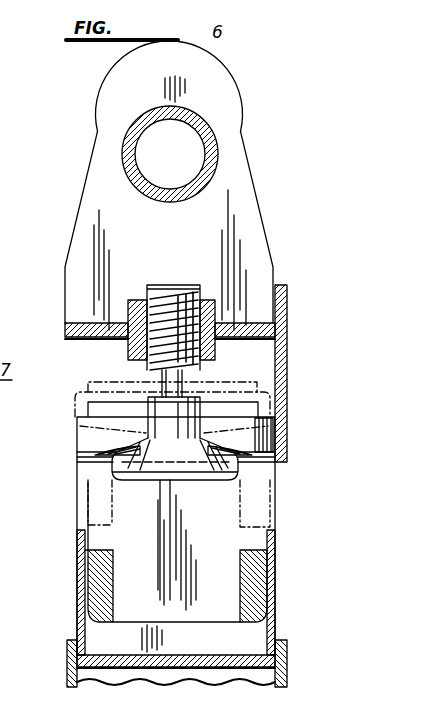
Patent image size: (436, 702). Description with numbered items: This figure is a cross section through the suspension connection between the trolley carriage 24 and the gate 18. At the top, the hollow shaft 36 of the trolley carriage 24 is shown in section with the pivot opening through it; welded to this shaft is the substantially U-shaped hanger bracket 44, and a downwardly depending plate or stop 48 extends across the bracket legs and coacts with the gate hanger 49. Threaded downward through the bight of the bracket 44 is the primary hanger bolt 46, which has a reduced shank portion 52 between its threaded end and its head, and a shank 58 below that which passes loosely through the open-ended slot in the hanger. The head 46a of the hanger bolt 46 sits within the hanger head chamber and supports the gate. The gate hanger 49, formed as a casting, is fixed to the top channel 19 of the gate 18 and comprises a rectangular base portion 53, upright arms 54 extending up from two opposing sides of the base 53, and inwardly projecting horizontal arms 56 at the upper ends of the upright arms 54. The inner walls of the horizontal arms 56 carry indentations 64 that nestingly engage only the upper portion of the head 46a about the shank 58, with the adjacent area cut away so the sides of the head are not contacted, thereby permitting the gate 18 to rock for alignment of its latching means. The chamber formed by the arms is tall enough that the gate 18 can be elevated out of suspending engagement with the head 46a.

The trolley carriage 24 is at (98, 114).
The hollow shaft 36 is at (131, 167).
The U-shaped hanger bracket 44 is at (80, 228).
The hanger bolt 46 is at (184, 290).
The head of hanger bolt 46a is at (226, 480).
The reduced shank portion 52 is at (166, 383).
The shank 58 is at (195, 398).
The indentations 64 is at (110, 452).
The gate hanger 49 is at (77, 480).
The upright arms 54 is at (100, 490).
The horizontal arms 56 is at (272, 456).
The rectangular base portion 53 is at (251, 574).
The top channel 19 is at (79, 576).
The gate 18 is at (67, 661).
The stop plate 48 is at (176, 690).